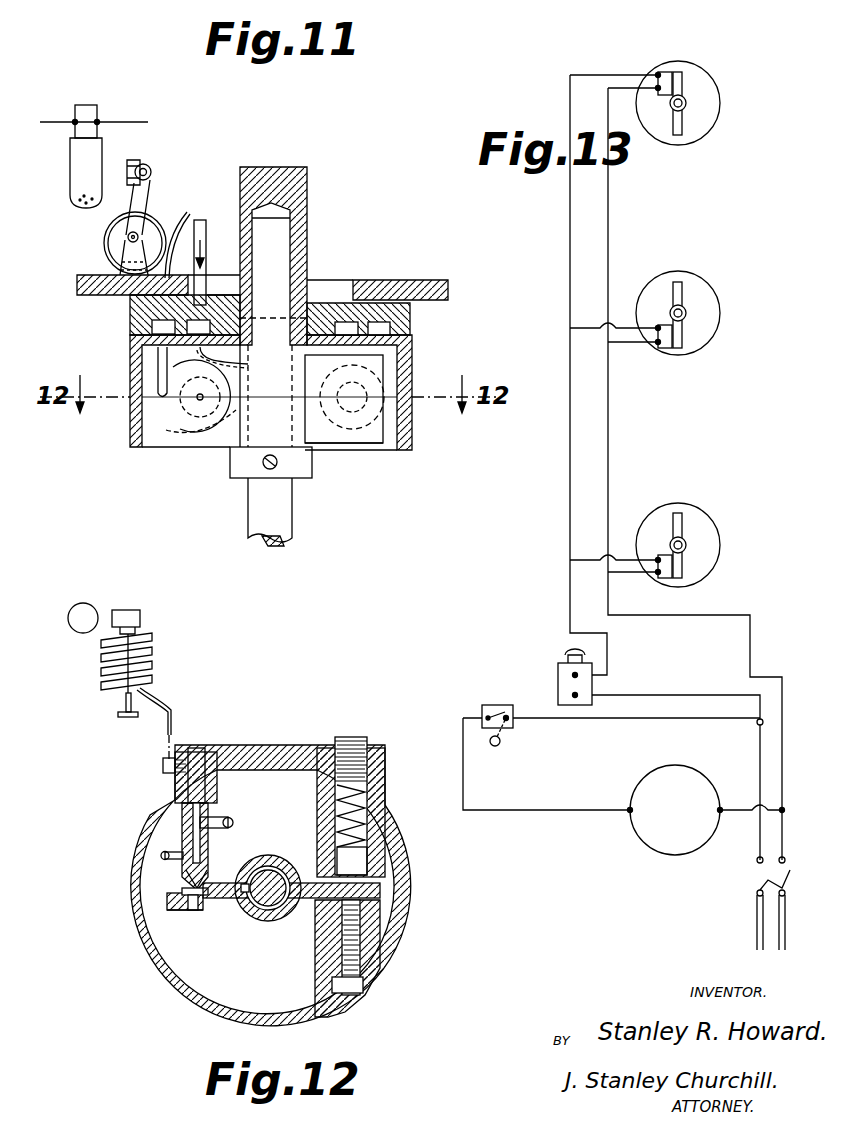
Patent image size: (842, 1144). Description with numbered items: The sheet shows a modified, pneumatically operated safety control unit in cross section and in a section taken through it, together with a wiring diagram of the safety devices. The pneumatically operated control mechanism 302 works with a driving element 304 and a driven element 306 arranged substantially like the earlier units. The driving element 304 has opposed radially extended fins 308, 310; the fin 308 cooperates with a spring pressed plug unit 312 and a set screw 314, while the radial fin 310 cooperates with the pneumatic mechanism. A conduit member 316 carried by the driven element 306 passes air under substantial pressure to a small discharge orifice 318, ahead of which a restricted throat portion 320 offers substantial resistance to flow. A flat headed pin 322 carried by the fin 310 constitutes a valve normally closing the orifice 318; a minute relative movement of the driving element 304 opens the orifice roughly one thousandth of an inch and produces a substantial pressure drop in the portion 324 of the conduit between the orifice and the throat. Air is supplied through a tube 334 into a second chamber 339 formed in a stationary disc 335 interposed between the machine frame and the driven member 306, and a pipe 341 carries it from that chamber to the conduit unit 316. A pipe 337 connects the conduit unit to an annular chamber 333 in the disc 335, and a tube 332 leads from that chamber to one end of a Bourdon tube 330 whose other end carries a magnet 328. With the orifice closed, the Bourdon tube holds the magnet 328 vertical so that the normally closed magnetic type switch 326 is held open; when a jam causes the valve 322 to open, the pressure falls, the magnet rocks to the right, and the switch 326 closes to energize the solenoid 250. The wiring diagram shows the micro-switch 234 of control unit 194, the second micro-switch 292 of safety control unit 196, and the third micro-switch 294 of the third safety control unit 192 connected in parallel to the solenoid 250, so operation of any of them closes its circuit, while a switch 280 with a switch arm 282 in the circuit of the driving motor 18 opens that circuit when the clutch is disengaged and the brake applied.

In FIG. 13, the driving motor 18 is at (642, 833).
In FIG. 13, the third safety control unit 192 is at (645, 50).
In FIG. 13, the control unit 194 is at (660, 275).
In FIG. 13, the safety control unit 196 is at (663, 503).
In FIG. 13, the micro-switch 234 is at (665, 350).
In FIG. 13, the solenoid 250 is at (558, 668).
In FIG. 13, the switch 280 is at (490, 705).
In FIG. 13, the switch arm 282 is at (501, 740).
In FIG. 13, the second micro-switch 292 is at (665, 580).
In FIG. 13, the third micro-switch 294 is at (663, 72).
In FIG. 11, the pneumatically operated control mechanism 302 is at (204, 168).
In FIG. 11, the driving element 304 is at (300, 427).
In FIG. 12, the driving element 304 is at (252, 915).
In FIG. 11, the driven element 306 is at (412, 356).
In FIG. 12, the driven element 306 is at (277, 745).
In FIG. 11, the radially extended fin 308 is at (358, 437).
In FIG. 12, the radially extended fin 308 is at (380, 890).
In FIG. 11, the radial fin 310 is at (211, 420).
In FIG. 12, the radial fin 310 is at (167, 912).
In FIG. 11, the spring pressed plug unit 312 is at (363, 410).
In FIG. 12, the spring pressed plug unit 312 is at (367, 808).
In FIG. 12, the set screw 314 is at (363, 985).
In FIG. 11, the conduit member 316 is at (212, 418).
In FIG. 12, the conduit member 316 is at (212, 850).
In FIG. 12, the discharge orifice 318 is at (182, 884).
In FIG. 12, the restricted throat portion 320 is at (185, 835).
In FIG. 12, the flat headed pin 322 is at (193, 910).
In FIG. 12, the portion of the conduit 324 is at (198, 872).
In FIG. 11, the magnetic type switch 326 is at (72, 205).
In FIG. 12, the magnetic type switch 326 is at (92, 588).
In FIG. 11, the magnet 328 is at (132, 160).
In FIG. 12, the magnet 328 is at (140, 612).
In FIG. 11, the Bourdon tube 330 is at (106, 250).
In FIG. 12, the Bourdon tube 330 is at (155, 661).
In FIG. 11, the tube 332 is at (170, 233).
In FIG. 12, the tube 332 is at (173, 706).
In FIG. 11, the annular chamber 333 is at (152, 328).
In FIG. 11, the tube 334 is at (225, 192).
In FIG. 11, the stationary disc 335 is at (130, 308).
In FIG. 11, the pipe 337 is at (158, 356).
In FIG. 12, the pipe 337 is at (161, 855).
In FIG. 11, the second chamber 339 is at (244, 304).
In FIG. 11, the pipe 341 is at (243, 364).
In FIG. 12, the pipe 341 is at (215, 820).